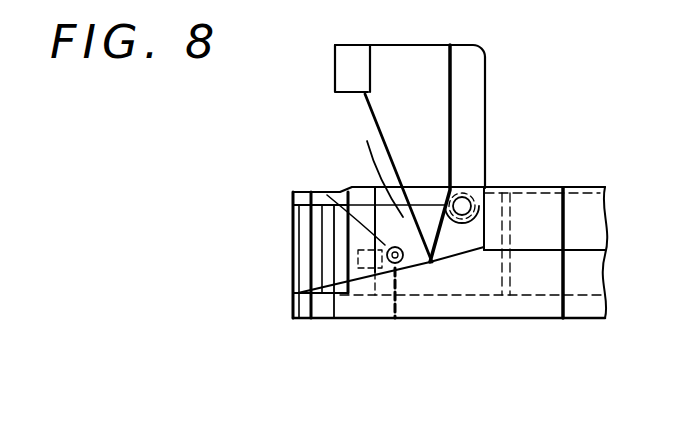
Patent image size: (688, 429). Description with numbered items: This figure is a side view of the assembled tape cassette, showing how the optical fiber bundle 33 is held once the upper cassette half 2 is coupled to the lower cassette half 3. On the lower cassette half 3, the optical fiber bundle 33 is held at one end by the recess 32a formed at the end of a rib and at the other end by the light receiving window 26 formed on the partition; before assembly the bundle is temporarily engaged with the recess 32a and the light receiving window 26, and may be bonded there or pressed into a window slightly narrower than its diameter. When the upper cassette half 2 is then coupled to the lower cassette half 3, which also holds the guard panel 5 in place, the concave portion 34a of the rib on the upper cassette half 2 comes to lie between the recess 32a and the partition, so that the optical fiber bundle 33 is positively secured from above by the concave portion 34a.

The guard panel 5 is at (478, 73).
The upper cassette half 2 is at (540, 212).
The lower cassette half 3 is at (534, 307).
The optical fiber bundle 33 is at (337, 192).
The light receiving window 26 is at (369, 151).
The concave portion 34a is at (386, 251).
The recess 32a is at (362, 255).